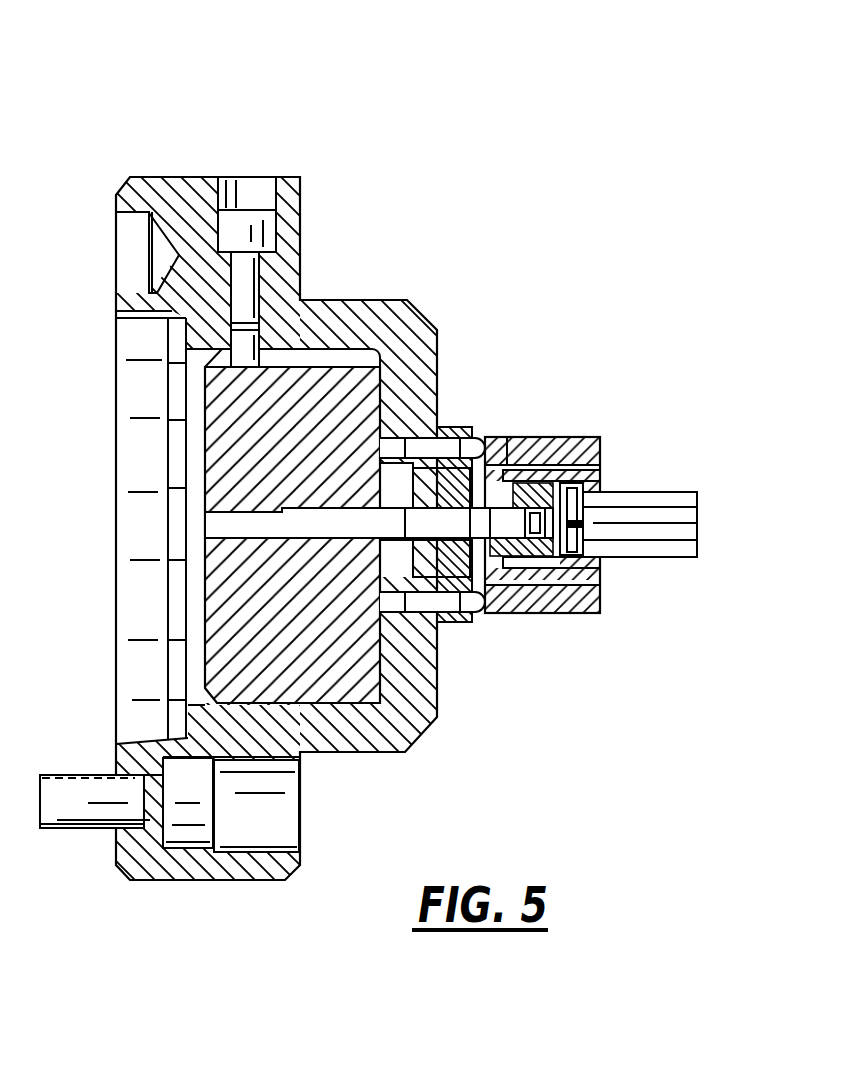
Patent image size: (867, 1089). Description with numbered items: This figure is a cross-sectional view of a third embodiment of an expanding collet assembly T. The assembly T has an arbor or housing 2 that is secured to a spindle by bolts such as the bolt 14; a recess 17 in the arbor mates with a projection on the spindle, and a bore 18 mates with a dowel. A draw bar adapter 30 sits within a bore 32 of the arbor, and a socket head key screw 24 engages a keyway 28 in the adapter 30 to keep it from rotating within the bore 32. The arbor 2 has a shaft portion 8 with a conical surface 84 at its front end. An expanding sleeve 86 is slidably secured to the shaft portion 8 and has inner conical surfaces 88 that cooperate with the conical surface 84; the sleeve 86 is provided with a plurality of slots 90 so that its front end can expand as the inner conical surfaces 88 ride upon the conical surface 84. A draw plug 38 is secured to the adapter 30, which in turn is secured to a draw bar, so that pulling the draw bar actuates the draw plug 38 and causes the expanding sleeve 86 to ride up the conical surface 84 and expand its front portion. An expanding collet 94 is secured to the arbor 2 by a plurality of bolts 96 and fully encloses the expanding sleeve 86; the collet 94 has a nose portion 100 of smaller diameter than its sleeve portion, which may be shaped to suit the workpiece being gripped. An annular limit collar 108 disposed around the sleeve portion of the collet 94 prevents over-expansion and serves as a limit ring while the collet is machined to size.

The arbor 2 is at (332, 288).
The shaft portion 8 is at (493, 445).
The bolt 14 is at (95, 820).
The recess 17 is at (135, 395).
The bore 18 is at (130, 262).
The socket head key screw 24 is at (247, 215).
The keyway 28 is at (343, 356).
The draw bar adapter 30 is at (228, 460).
The bore 32 is at (195, 668).
The draw plug 38 is at (448, 470).
The conical surface 84 is at (560, 445).
The expanding sleeve 86 is at (518, 605).
The inner conical surfaces 88 is at (553, 587).
The slots 90 is at (523, 445).
The expanding collet 94 is at (684, 578).
The bolts 96 is at (452, 622).
The nose portion 100 is at (612, 557).
The annular limit collar 108 is at (598, 440).
The expanding collet assembly T is at (465, 90).